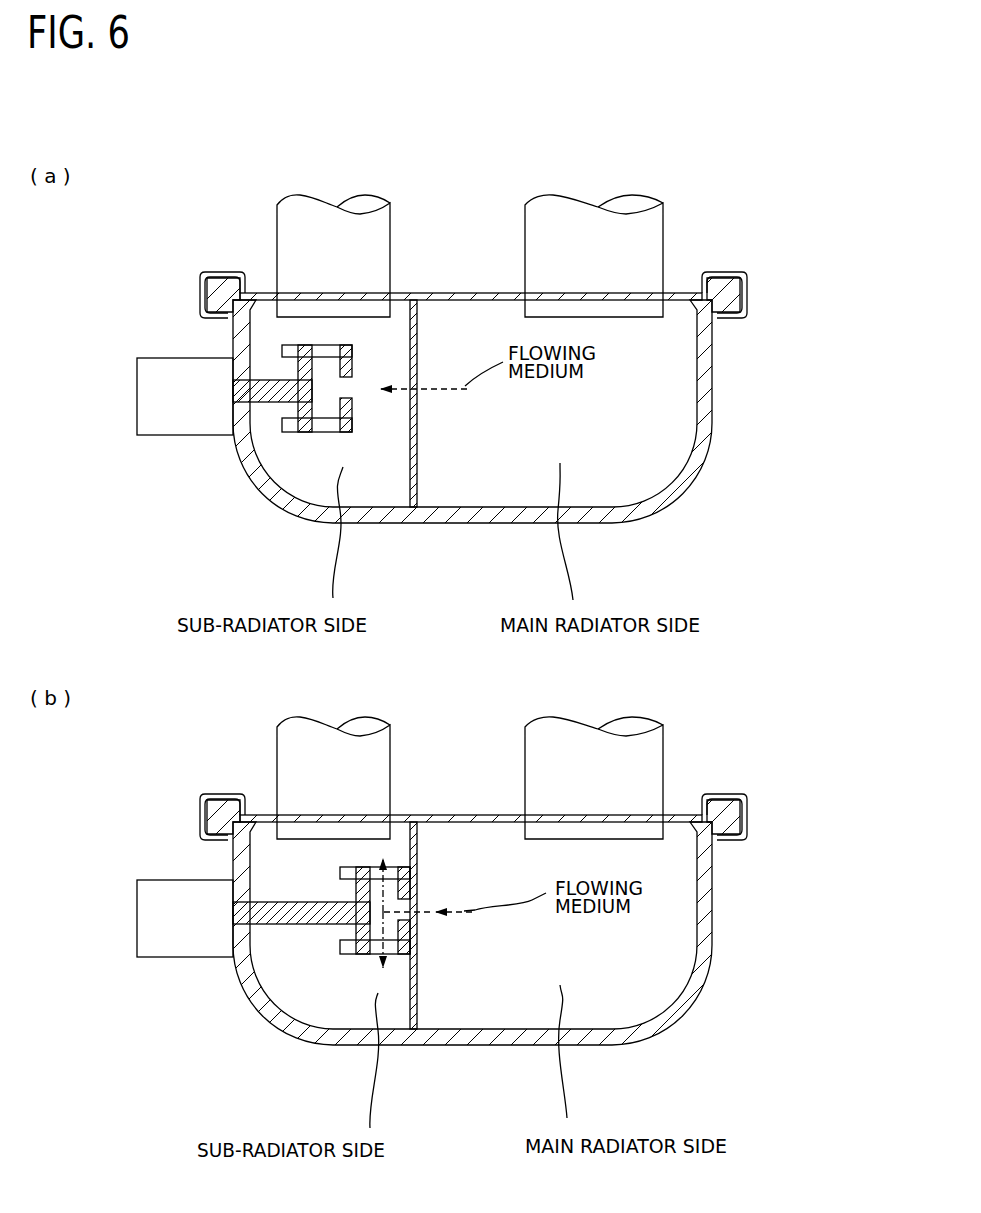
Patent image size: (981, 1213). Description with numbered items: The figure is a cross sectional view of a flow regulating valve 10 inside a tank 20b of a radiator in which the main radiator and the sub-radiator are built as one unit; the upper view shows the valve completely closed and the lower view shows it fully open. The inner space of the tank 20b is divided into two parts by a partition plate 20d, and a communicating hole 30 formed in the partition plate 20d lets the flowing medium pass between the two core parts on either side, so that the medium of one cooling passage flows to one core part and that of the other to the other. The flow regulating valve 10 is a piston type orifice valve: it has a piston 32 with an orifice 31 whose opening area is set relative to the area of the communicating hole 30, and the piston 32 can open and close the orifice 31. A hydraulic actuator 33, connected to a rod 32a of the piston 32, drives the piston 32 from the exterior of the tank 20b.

The flow regulating valve 10 is at (360, 728).
The tank 20b is at (721, 386).
The partition plate 20d is at (418, 452).
The communicating hole 30 is at (418, 407).
The orifice 31 is at (346, 383).
The piston 32 is at (275, 403).
The rod 32a is at (303, 441).
The hydraulic actuator 33 is at (134, 386).